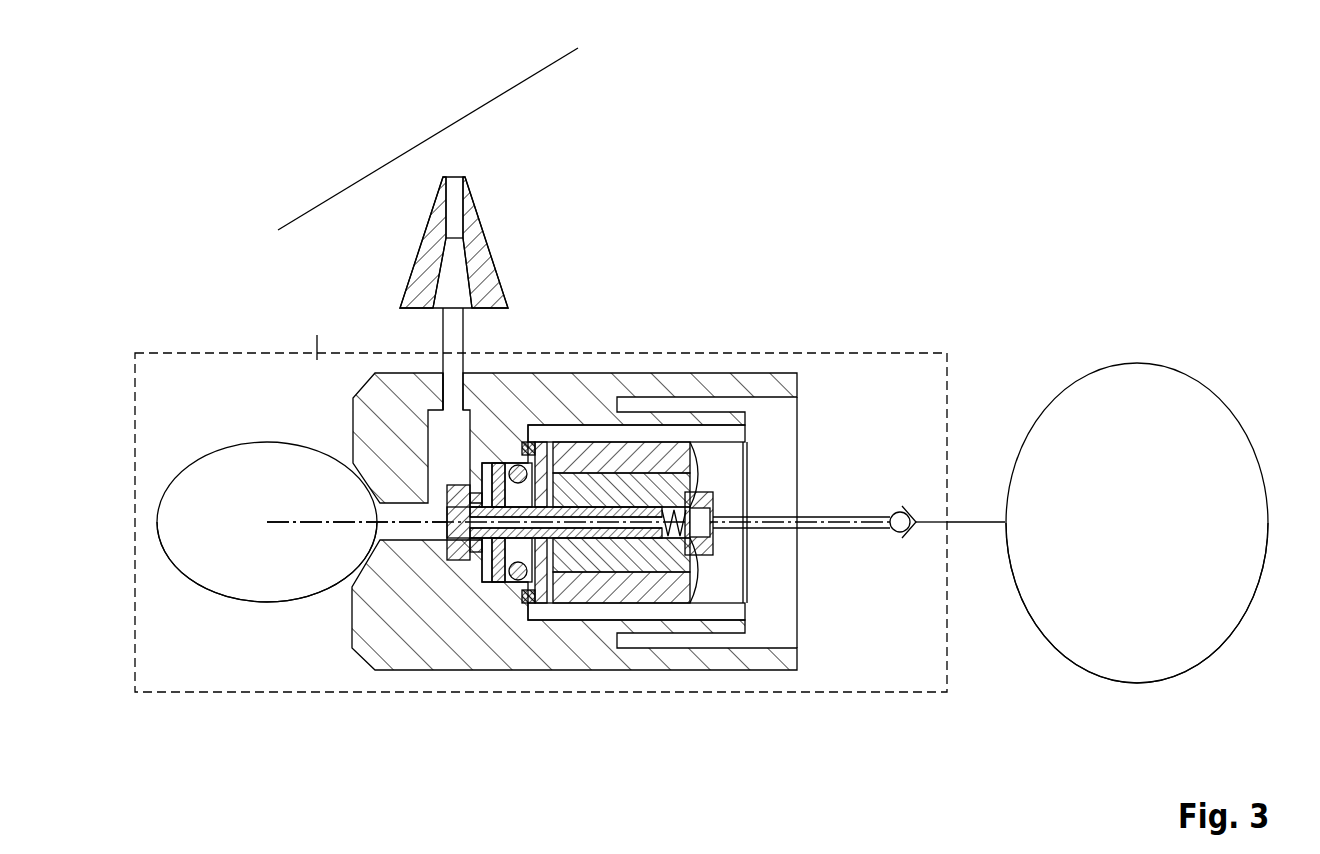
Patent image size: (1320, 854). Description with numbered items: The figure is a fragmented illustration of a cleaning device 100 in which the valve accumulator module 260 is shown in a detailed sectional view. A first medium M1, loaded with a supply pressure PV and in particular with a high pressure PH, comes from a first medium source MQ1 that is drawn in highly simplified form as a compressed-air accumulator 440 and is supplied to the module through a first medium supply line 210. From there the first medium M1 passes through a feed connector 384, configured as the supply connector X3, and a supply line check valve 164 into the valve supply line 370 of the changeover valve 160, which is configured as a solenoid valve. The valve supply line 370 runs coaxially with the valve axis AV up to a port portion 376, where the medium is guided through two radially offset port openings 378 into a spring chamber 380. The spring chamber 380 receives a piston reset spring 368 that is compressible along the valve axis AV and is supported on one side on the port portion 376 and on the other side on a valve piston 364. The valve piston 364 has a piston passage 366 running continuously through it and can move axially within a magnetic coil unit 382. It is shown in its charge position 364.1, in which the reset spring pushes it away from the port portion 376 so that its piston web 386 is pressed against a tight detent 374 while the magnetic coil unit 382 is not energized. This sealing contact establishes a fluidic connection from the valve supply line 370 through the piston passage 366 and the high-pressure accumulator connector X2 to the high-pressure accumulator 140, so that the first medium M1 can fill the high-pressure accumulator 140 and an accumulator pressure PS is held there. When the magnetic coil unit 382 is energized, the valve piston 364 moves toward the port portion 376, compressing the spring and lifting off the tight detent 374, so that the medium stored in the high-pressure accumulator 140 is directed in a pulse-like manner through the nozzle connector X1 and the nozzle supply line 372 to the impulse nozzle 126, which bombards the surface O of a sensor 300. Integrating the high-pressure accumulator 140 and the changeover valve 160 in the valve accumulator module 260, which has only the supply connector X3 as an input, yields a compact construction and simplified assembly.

The cleaning device 100 is at (1086, 114).
The sensor 300 is at (422, 104).
The surface O is at (519, 86).
The impulse nozzle 126 is at (425, 249).
The nozzle supply line 372 is at (467, 325).
The valve accumulator module 260 is at (176, 353).
The changeover valve 160 is at (793, 323).
The spring chamber 380 is at (668, 487).
The magnetic coil unit 382 is at (593, 458).
The piston reset spring 368 is at (668, 540).
The piston passage 366 is at (623, 530).
The port opening 378 is at (698, 480).
The valve piston 364 is at (568, 660).
The charge position 364.1 is at (572, 533).
The tight detent 374 is at (428, 550).
The piston web 386 is at (458, 545).
The port portion 376 is at (717, 505).
The valve supply line 370 is at (820, 530).
The supply line check valve 164 is at (895, 535).
The feed connector 384 is at (924, 402).
The supply connector X3 is at (932, 522).
The first medium supply line 210 is at (975, 522).
The compressed-air accumulator 440 is at (1137, 480).
The first medium source MQ1 is at (1135, 363).
The supply pressure PV is at (1137, 640).
The high pressure PH is at (1133, 683).
The high-pressure accumulator 140 is at (268, 443).
The accumulator pressure PS is at (267, 667).
The first medium M1 is at (252, 568).
The valve axis AV is at (317, 523).
The high-pressure accumulator connector X2 is at (388, 506).
The nozzle connector X1 is at (445, 394).